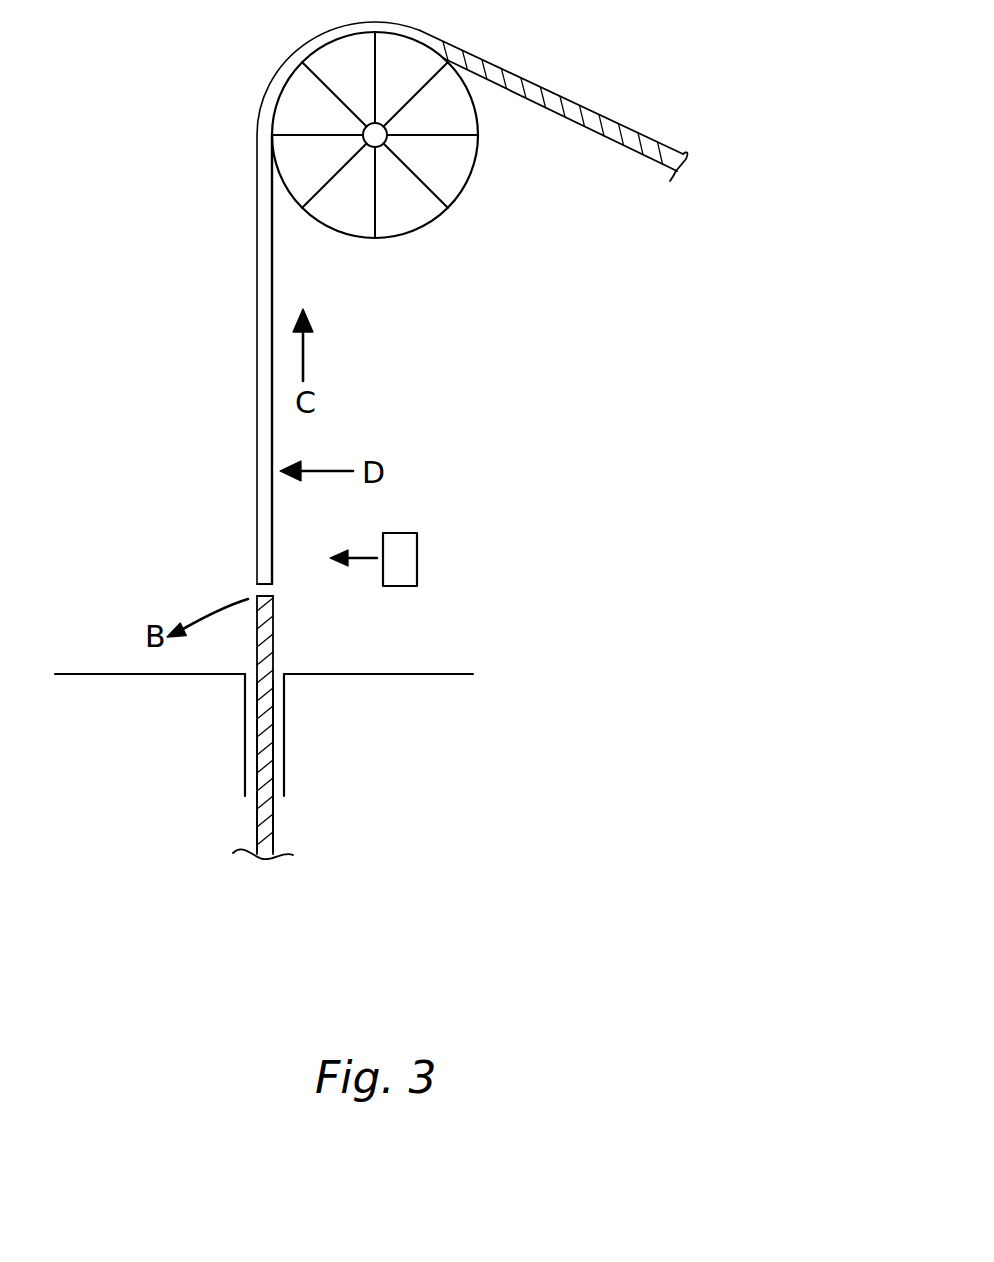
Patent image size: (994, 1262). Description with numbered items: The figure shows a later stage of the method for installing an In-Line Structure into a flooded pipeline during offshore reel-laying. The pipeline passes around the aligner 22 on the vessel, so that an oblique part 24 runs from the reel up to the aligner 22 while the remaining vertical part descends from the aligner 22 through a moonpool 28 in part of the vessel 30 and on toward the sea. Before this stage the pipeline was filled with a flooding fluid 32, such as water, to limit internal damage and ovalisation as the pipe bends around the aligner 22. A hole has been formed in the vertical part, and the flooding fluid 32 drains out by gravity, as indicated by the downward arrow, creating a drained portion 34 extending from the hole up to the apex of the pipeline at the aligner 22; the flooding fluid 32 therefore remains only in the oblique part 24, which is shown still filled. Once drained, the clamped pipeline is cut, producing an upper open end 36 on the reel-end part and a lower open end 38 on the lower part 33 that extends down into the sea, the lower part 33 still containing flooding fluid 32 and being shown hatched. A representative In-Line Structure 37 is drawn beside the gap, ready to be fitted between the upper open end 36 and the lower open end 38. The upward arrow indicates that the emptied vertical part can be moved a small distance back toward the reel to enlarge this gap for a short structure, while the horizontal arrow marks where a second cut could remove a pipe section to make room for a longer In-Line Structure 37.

The aligner 22 is at (423, 225).
The oblique part 24 is at (576, 107).
The moonpool 28 is at (284, 745).
The vessel 30 is at (447, 672).
The flooding fluid 32 is at (609, 120).
The lower part 33 is at (262, 757).
The drained portion 34 is at (260, 303).
The upper open end 36 is at (272, 590).
The In-Line Structure 37 is at (405, 552).
The lower open end 38 is at (265, 590).